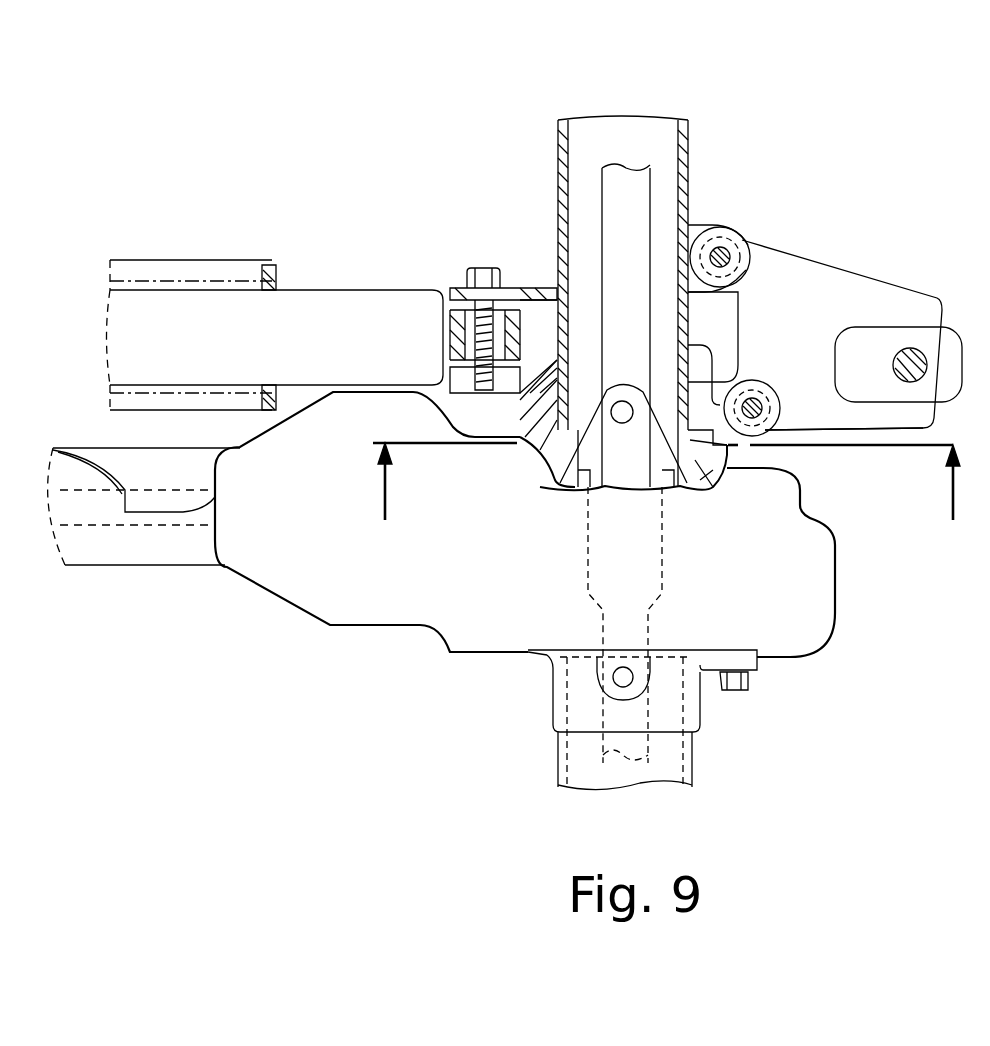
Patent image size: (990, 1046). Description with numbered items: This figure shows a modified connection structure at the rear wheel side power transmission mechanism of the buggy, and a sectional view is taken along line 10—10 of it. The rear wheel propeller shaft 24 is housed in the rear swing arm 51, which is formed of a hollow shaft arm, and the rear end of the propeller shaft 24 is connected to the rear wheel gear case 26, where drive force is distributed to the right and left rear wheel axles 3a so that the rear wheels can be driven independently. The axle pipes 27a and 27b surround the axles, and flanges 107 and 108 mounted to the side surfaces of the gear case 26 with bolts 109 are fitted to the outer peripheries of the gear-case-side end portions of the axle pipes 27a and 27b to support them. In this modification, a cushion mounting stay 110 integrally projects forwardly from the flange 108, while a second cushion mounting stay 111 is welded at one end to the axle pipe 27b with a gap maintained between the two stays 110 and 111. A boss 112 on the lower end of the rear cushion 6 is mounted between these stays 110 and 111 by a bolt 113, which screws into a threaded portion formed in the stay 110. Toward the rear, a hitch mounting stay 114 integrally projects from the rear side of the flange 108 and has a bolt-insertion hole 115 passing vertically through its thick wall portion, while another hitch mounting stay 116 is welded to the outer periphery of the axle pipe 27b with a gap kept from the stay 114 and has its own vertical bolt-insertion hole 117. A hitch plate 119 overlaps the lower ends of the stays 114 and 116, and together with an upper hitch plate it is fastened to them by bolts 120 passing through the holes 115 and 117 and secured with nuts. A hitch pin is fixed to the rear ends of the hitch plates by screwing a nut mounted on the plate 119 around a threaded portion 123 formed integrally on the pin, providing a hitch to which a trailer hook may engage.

The rear wheel axle 3a is at (633, 165).
The rear cushion 6 is at (335, 283).
The section line 10— 10 is at (675, 503).
The rear wheel propeller shaft 24 is at (100, 524).
The rear wheel gear case 26 is at (828, 583).
The axle pipe 27a is at (693, 757).
The axle pipe 27b is at (556, 137).
The rear swing arm 51 is at (170, 566).
The flange 107 is at (553, 703).
The flange 108 is at (692, 360).
The bolt 109 is at (745, 690).
The cushion mounting stay 110 is at (420, 368).
The cushion mounting stay 111 is at (540, 288).
The boss 112 is at (522, 288).
The bolt 113 is at (478, 268).
The hitch mounting stay 114 is at (720, 370).
The bolt-insertion hole 115 is at (772, 423).
The hitch mounting stay 116 is at (700, 225).
The bolt-insertion hole 117 is at (722, 258).
The hitch plate 119 is at (843, 286).
The bolt 120 is at (757, 275).
The threaded portion 123 is at (915, 348).